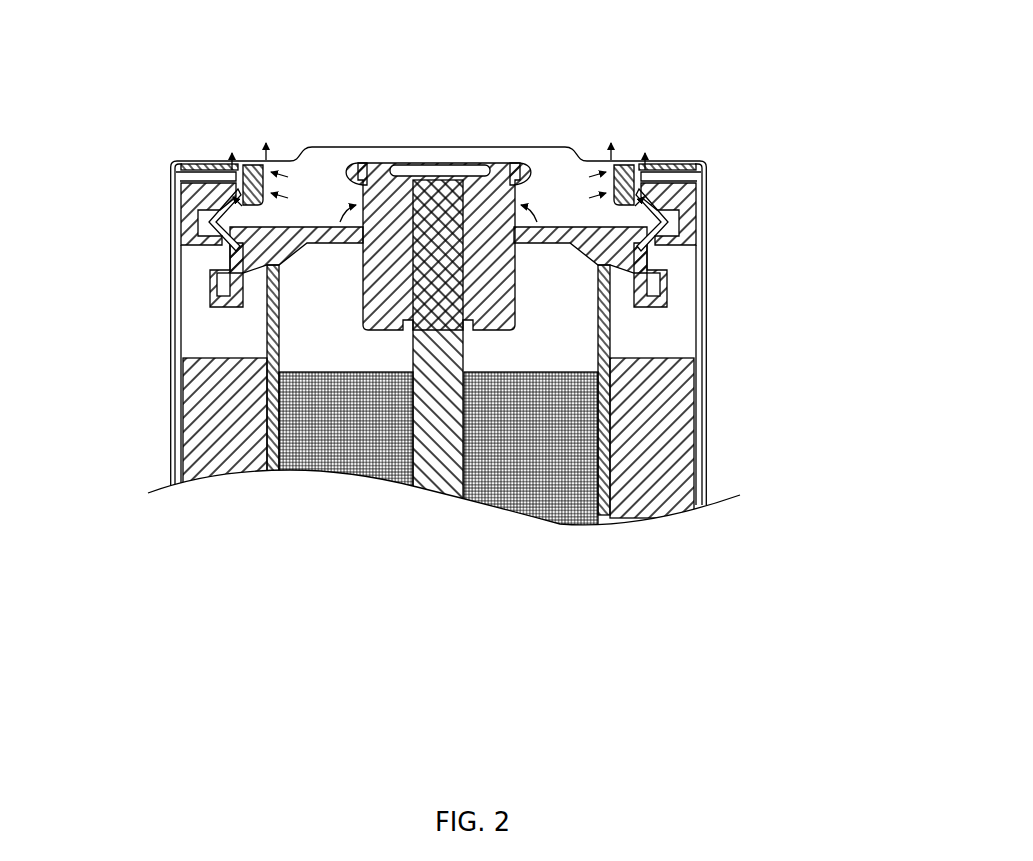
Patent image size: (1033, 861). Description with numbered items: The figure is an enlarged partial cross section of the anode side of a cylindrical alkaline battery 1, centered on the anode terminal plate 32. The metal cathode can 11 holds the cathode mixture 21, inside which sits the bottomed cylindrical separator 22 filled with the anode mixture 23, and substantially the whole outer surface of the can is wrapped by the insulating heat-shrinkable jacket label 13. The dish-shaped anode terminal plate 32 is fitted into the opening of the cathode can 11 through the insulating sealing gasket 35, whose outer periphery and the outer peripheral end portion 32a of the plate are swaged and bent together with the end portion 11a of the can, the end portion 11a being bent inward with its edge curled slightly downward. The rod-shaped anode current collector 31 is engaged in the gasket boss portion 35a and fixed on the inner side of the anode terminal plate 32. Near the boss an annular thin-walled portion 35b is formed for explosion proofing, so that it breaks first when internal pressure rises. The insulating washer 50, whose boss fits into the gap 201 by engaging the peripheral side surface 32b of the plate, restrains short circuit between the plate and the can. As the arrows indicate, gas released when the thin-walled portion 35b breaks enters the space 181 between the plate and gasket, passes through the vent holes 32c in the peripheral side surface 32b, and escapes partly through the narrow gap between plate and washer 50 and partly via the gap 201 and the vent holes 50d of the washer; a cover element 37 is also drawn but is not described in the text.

The alkaline battery 1 is at (740, 82).
The cathode can 11 is at (180, 397).
The end portion of the cathode can 11a is at (177, 173).
The jacket label 13 is at (172, 337).
The cathode mixture 21 is at (180, 460).
The separator 22 is at (268, 473).
The anode mixture 23 is at (355, 471).
The anode current collector 31 is at (437, 457).
The anode terminal plate 32 is at (588, 150).
The outer peripheral end portion 32a is at (175, 247).
The peripheral side surface 32b is at (250, 165).
The vent hole 32c is at (285, 165).
The sealing gasket 35 is at (375, 180).
The gasket boss portion 35a is at (428, 165).
The thin-walled portion 35b is at (362, 165).
The top cover plate 37 is at (507, 143).
The washer 50 is at (180, 158).
The vent hole 50d is at (238, 158).
The space 181 is at (313, 143).
The gap 201 is at (177, 213).